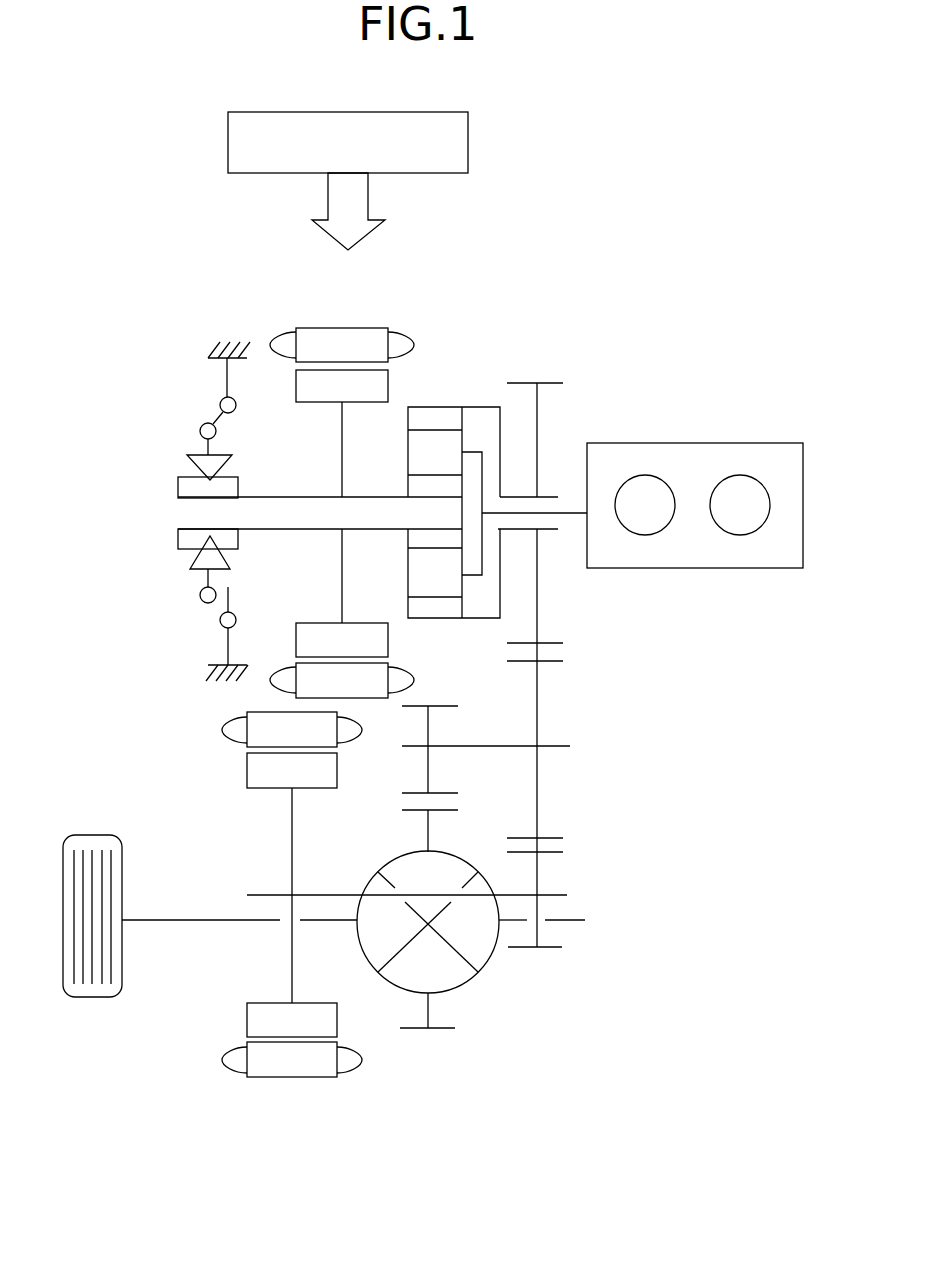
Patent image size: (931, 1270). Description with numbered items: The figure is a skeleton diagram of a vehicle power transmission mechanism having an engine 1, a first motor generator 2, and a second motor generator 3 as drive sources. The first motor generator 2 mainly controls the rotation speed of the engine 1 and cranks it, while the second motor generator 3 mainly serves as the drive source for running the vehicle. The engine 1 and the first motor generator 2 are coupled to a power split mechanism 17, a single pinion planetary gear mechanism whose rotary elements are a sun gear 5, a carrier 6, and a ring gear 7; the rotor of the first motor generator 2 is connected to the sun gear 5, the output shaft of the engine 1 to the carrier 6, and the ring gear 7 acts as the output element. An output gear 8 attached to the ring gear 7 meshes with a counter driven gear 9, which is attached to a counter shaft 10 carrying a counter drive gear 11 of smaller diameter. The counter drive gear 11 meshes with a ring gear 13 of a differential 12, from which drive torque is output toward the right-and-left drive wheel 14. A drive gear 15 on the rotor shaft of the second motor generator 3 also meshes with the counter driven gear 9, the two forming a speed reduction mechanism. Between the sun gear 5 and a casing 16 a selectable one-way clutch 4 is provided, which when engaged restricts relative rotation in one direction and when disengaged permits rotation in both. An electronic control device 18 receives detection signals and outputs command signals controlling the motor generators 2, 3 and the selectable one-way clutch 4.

The engine 1 is at (727, 443).
The first motor generator 2 is at (338, 333).
The second motor generator 3 is at (302, 1081).
The selectable one-way clutch 4 is at (165, 466).
The sun gear 5 is at (410, 489).
The carrier 6 is at (483, 453).
The ring gear 7 is at (437, 408).
The output gear 8 is at (552, 384).
The counter driven gear 9 is at (555, 663).
The counter shaft 10 is at (553, 748).
The counter drive gear 11 is at (449, 705).
The differential 12 is at (462, 990).
The ring gear 13 is at (412, 1030).
The drive wheel 14 is at (95, 998).
The drive gear 15 is at (551, 949).
The casing 16 is at (233, 340).
The power split mechanism 17 is at (472, 356).
The electronic control device 18 is at (469, 141).